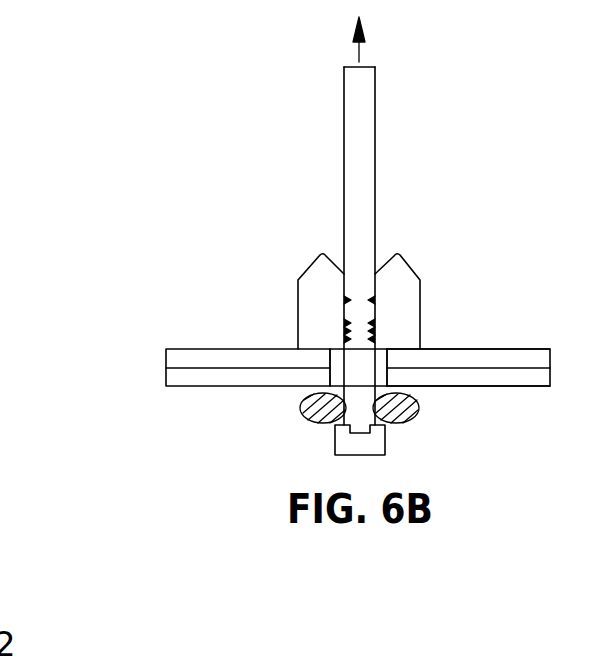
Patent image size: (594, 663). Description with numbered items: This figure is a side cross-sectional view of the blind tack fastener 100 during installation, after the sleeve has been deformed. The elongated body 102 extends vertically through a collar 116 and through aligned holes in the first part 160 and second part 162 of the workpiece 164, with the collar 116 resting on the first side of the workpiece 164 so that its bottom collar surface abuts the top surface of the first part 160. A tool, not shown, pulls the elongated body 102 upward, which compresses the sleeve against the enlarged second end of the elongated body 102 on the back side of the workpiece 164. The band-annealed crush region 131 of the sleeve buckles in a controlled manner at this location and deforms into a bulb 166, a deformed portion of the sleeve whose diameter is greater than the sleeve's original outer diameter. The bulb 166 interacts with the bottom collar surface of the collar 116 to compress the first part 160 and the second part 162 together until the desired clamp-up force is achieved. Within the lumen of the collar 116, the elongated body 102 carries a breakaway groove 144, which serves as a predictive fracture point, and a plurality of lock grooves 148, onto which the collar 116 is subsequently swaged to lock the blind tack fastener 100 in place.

The blind tack fastener 100 is at (170, 157).
The elongated body 102 is at (376, 115).
The collar 116 is at (308, 317).
The crush region 131 is at (300, 410).
The breakaway groove 144 is at (345, 300).
The lock grooves 148 is at (376, 332).
The first part 160 is at (541, 352).
The second part 162 is at (539, 381).
The workpiece 164 is at (469, 346).
The bulb 166 is at (415, 410).